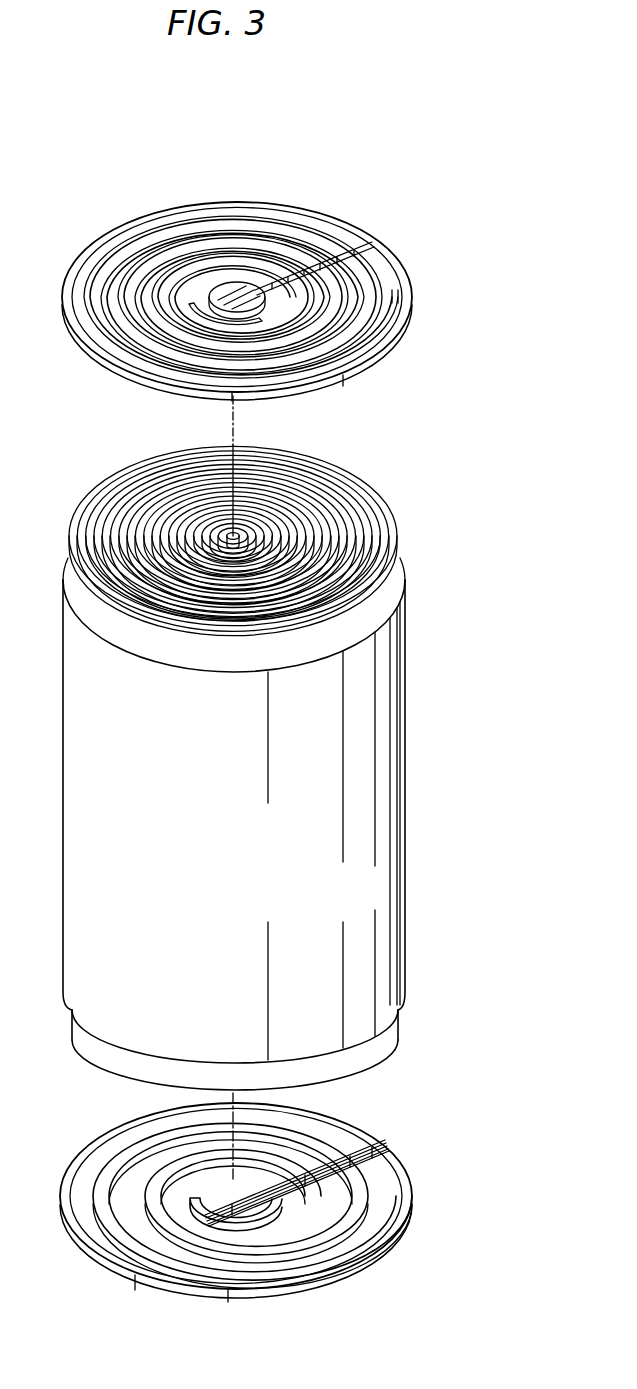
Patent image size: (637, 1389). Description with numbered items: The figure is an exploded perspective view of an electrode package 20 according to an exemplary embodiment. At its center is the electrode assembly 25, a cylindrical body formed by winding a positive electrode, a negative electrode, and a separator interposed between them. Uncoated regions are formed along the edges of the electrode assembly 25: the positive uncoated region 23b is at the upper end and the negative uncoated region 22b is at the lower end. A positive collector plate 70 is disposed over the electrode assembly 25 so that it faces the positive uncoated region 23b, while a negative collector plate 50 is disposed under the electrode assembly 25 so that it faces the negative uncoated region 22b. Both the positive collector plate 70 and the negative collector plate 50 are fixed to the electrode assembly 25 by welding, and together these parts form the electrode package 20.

The electrode package 20 is at (214, 136).
The positive collector plate 70 is at (420, 289).
The positive uncoated region 23b is at (412, 512).
The electrode assembly 25 is at (421, 729).
The negative uncoated region 22b is at (403, 1022).
The negative collector plate 50 is at (419, 1119).